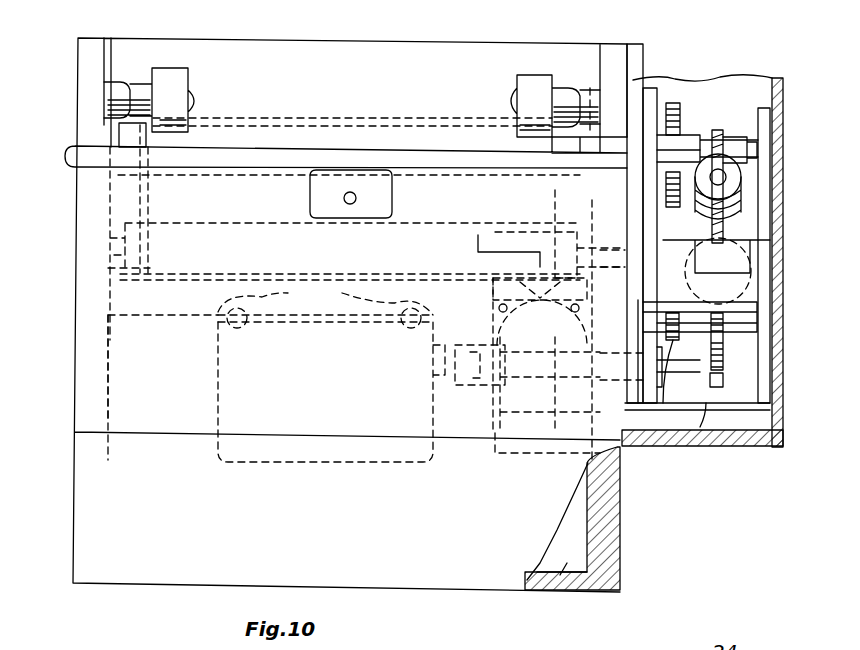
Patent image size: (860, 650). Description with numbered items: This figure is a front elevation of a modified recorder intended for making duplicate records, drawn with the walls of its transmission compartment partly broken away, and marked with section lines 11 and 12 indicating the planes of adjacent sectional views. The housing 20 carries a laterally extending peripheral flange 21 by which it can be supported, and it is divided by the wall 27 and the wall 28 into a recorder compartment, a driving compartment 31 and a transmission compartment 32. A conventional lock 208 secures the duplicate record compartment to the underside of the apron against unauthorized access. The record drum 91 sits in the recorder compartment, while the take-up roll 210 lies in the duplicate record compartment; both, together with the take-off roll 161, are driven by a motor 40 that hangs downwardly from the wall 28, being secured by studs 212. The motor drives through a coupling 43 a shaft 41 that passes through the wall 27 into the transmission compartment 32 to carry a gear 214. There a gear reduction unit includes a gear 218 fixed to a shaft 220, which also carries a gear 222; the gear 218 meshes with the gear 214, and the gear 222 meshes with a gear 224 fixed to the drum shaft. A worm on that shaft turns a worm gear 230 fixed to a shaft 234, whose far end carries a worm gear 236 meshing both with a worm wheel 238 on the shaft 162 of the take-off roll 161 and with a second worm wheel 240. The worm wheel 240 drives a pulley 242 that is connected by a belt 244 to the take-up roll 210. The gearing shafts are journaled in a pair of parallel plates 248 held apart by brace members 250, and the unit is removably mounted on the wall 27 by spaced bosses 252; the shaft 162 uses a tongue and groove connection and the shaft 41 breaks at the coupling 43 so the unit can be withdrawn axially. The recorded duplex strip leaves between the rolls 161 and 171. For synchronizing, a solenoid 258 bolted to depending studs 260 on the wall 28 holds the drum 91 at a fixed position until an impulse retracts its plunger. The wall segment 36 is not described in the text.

The housing 20 is at (78, 318).
The peripheral flange 21 is at (70, 168).
The wall 27 is at (610, 481).
The wall 28 is at (172, 320).
The driving compartment 31 is at (548, 590).
The transmission compartment 32 is at (770, 420).
The housing side wall 36 is at (775, 440).
The motor 40 is at (305, 463).
The shaft 41 is at (530, 375).
The coupling 43 is at (470, 380).
The record drum 91 is at (137, 200).
The take-off roll 161 is at (128, 133).
The shaft 162 is at (633, 133).
The delivery roll 171 is at (160, 75).
The lock 208 is at (312, 205).
The take-up roll 210 is at (108, 268).
The studs 212 is at (342, 296).
The gear 214 is at (655, 370).
The gear 218 is at (725, 343).
The shaft 220 is at (700, 320).
The gear 222 is at (682, 388).
The gear 224 is at (675, 103).
The worm gear 230 is at (763, 265).
The shaft 234 is at (718, 178).
The worm gear 236 is at (740, 180).
The worm wheel 238 is at (740, 130).
The worm wheel 240 is at (750, 215).
The pulley 242 is at (645, 224).
The belt 244 is at (645, 207).
The plates 248 is at (655, 100).
The brace members 250 is at (700, 322).
The bosses 252 is at (617, 450).
The solenoid 258 is at (540, 440).
The studs 260 is at (545, 303).
The section line 11- 11 is at (758, 32).
The section line 12- 12 is at (492, 68).